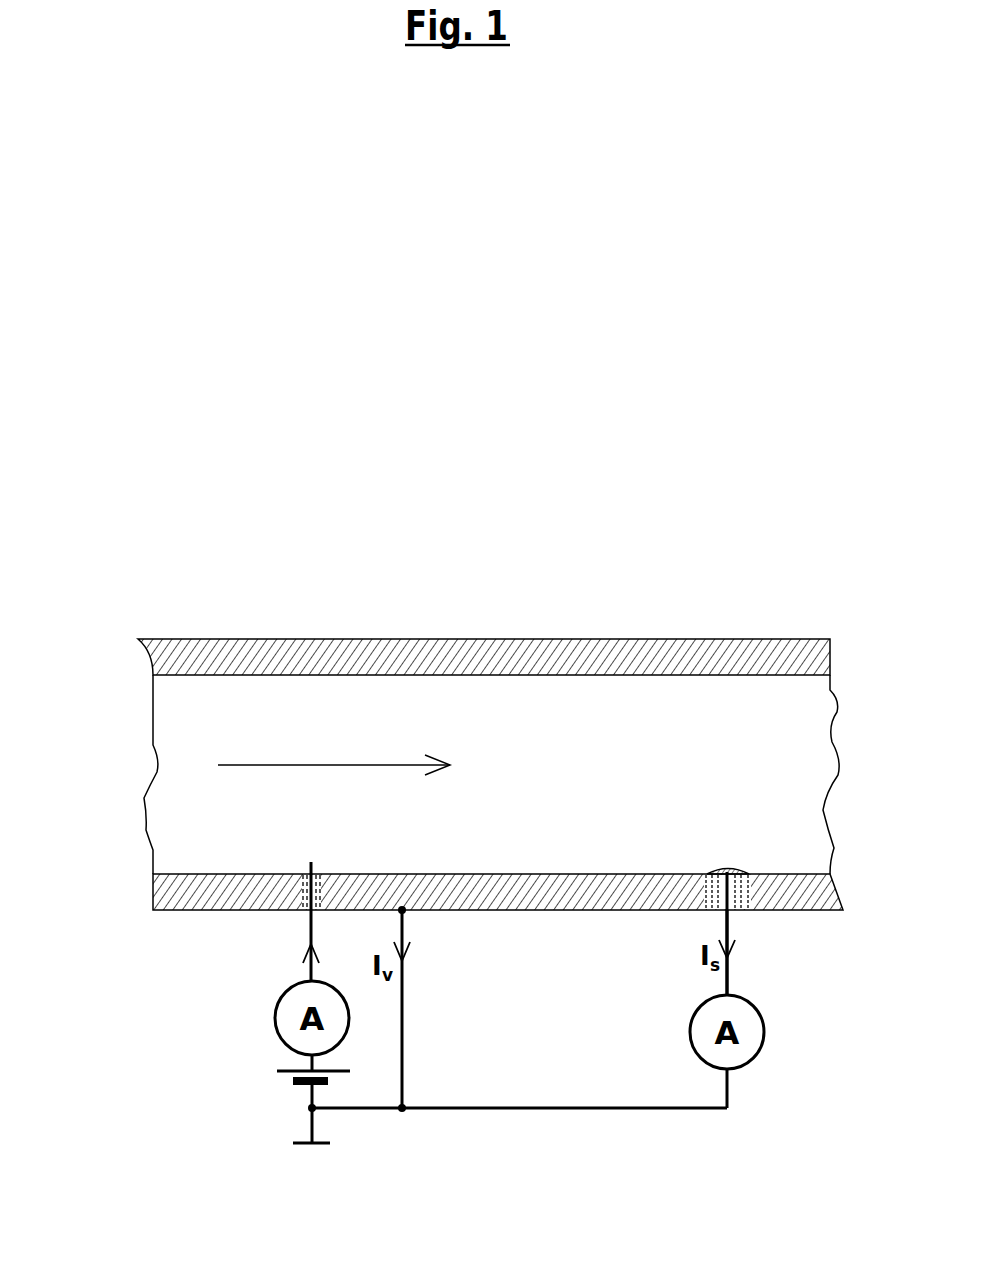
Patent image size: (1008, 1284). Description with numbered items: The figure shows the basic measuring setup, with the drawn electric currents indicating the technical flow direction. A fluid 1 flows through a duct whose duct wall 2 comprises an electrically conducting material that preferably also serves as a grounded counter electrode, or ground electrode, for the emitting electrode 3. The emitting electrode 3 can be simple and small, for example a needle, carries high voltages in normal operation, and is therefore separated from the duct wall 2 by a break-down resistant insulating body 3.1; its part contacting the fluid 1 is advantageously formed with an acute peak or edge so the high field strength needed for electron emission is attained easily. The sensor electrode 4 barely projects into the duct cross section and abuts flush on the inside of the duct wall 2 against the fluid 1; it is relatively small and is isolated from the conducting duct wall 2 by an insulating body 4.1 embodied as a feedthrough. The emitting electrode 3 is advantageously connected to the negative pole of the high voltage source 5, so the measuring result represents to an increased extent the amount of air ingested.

The fluid 1 is at (311, 708).
The duct wall 2 is at (600, 657).
The emitting electrode 3 is at (311, 860).
The insulating body 3.1 is at (303, 885).
The sensor electrode 4 is at (730, 868).
The insulating body 4.1 is at (750, 907).
The high voltage source 5 is at (283, 1080).